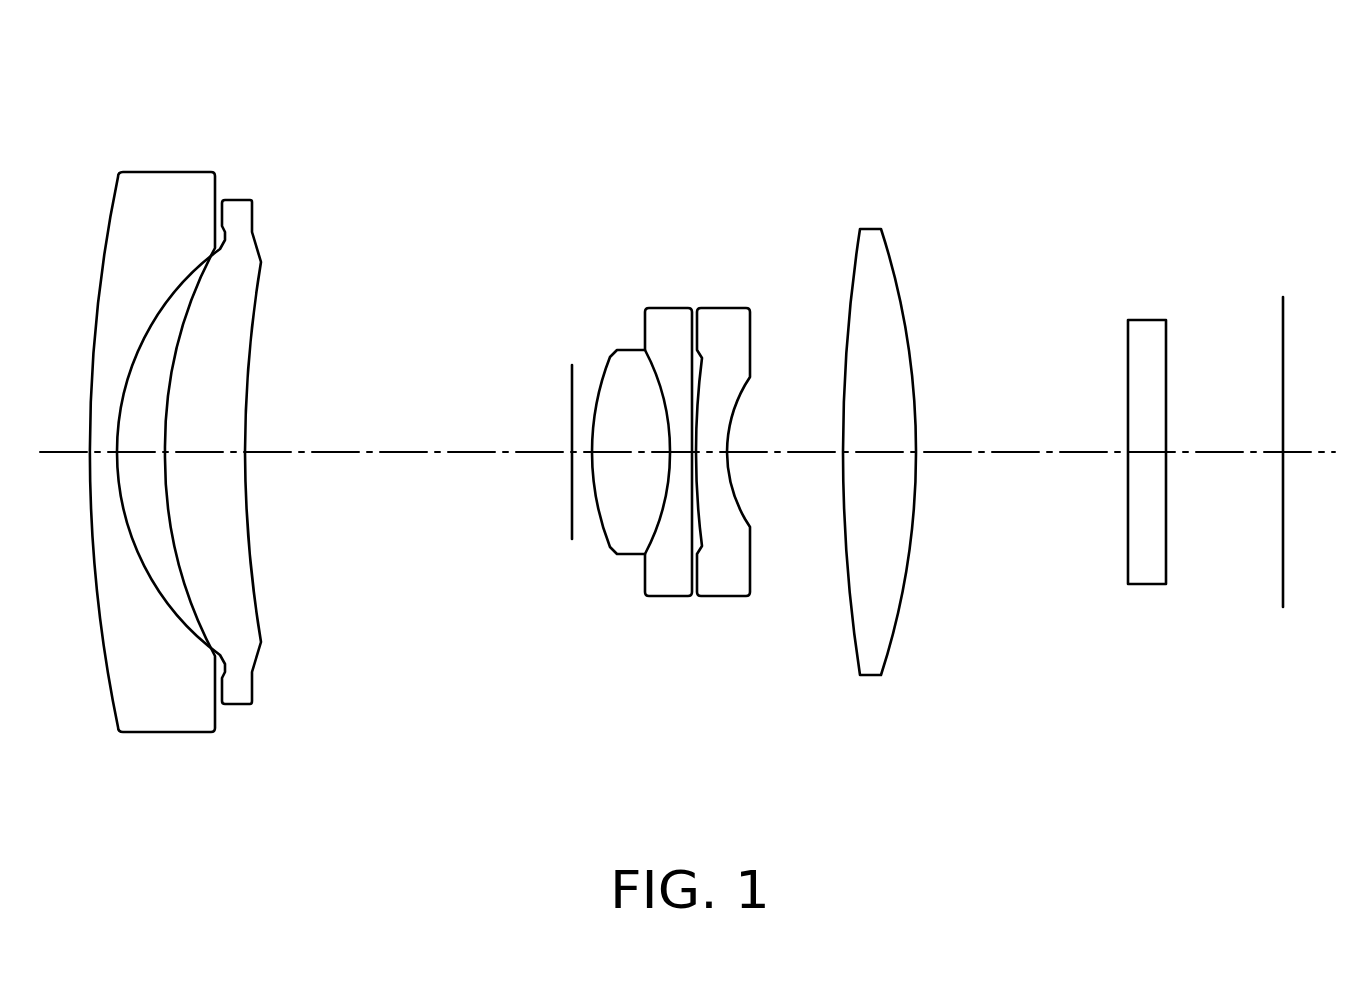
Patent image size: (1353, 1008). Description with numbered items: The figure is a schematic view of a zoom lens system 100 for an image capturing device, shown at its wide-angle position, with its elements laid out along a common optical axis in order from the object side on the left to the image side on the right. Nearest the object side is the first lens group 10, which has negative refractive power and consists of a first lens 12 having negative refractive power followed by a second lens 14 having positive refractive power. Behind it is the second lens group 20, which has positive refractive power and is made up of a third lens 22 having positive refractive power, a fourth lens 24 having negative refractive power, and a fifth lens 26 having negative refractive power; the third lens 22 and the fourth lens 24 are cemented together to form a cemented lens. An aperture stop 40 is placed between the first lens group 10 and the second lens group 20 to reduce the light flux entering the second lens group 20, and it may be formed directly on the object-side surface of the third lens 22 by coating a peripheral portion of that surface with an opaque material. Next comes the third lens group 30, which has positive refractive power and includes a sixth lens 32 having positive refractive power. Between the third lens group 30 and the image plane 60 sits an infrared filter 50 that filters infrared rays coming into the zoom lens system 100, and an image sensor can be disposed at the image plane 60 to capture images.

The zoom lens system 100 is at (611, 78).
The first lens group 10 is at (73, 96).
The first lens 12 is at (130, 258).
The second lens 14 is at (241, 227).
The second lens group 20 is at (565, 241).
The third lens 22 is at (625, 373).
The fourth lens 24 is at (670, 323).
The fifth lens 26 is at (727, 323).
The third lens group 30 is at (881, 425).
The sixth lens 32 is at (865, 308).
The aperture stop 40 is at (571, 397).
The infrared filter 50 is at (1137, 364).
The image plane 60 is at (1282, 337).